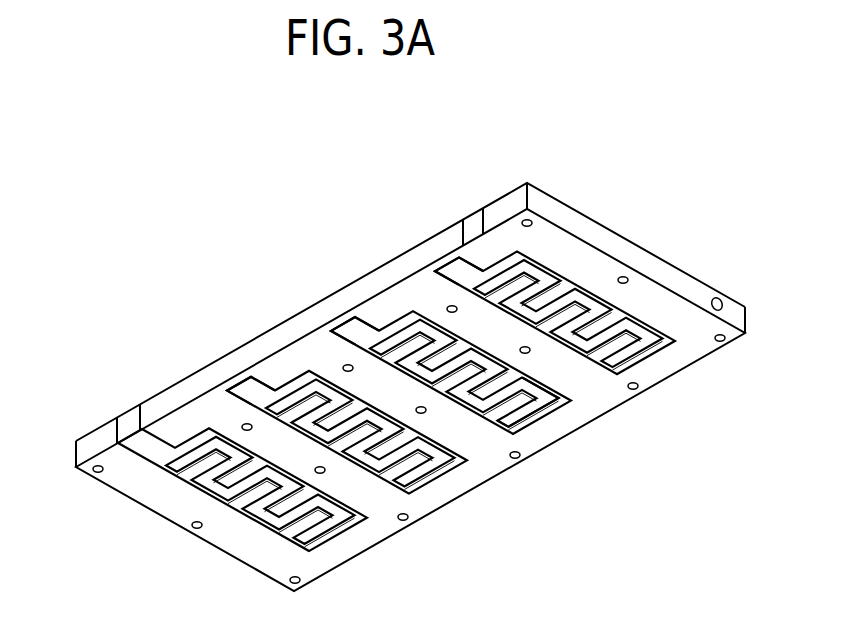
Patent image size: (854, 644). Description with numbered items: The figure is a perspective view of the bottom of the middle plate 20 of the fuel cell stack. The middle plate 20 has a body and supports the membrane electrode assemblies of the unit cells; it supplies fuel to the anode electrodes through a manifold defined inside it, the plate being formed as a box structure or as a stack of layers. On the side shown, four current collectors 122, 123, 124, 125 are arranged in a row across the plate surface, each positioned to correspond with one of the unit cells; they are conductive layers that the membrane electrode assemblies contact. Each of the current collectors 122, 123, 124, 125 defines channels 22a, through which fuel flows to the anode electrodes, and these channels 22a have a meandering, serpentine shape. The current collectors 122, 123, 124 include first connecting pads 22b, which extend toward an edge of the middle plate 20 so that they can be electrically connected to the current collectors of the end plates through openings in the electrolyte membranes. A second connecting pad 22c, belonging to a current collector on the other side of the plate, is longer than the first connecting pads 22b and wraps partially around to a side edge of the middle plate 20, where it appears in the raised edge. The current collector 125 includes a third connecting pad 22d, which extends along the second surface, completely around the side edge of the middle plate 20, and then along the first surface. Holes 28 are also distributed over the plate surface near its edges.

The middle plate 20 is at (653, 242).
The channels 22a is at (546, 414).
The first connecting pads 22b is at (452, 272).
The second connecting pad 22c is at (477, 213).
The third connecting pad 22d is at (128, 428).
The fastening hole 28 is at (643, 388).
The current collector 122 is at (575, 287).
The current collector 123 is at (550, 411).
The current collector 124 is at (440, 487).
The current collector 125 is at (333, 545).